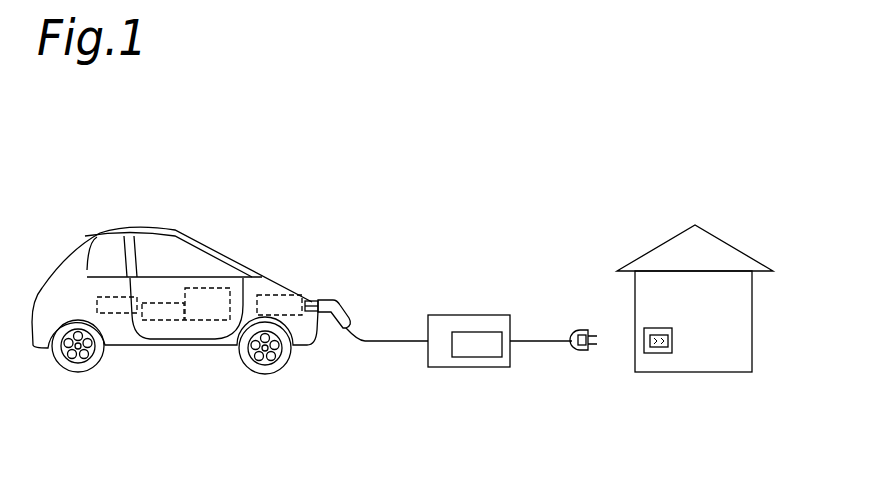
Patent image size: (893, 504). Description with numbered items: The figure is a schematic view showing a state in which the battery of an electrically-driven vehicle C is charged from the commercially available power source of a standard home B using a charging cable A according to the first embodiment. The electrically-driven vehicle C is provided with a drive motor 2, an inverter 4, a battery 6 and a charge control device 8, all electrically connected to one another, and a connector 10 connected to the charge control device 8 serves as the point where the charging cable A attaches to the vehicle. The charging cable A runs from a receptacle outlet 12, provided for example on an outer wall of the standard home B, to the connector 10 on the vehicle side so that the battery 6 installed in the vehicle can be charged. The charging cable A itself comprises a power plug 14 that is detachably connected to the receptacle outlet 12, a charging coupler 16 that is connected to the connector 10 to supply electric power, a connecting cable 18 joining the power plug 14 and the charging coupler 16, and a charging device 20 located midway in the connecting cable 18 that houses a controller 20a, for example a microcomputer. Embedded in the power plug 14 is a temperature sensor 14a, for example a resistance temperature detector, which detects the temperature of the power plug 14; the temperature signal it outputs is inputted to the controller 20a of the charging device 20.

The drive motor 2 is at (158, 325).
The inverter 4 is at (102, 293).
The battery 6 is at (205, 325).
The charge control device 8 is at (276, 292).
The connector 10 is at (313, 298).
The receptacle outlet 12 is at (655, 354).
The power plug 14 is at (583, 352).
The temperature sensor 14a is at (580, 328).
The charging coupler 16 is at (325, 318).
The connecting cable 18 is at (388, 342).
The charging device 20 is at (445, 368).
The controller 20a is at (482, 350).
The charging cable A is at (455, 289).
The standard home B is at (653, 219).
The electrically-driven vehicle C is at (172, 219).